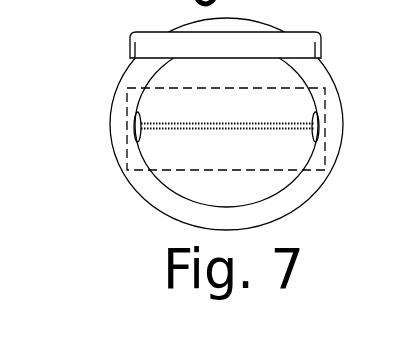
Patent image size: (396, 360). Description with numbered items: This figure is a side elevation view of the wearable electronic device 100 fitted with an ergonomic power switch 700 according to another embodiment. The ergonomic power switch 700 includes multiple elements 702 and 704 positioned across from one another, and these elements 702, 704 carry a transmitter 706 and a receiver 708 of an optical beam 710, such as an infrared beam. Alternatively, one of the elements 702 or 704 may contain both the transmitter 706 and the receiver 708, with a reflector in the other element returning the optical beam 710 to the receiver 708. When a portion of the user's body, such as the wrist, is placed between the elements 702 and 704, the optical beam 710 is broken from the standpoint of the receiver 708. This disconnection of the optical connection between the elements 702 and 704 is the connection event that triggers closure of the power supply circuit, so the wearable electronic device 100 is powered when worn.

The wearable electronic device 100 is at (102, 29).
The ergonomic power switch 700 is at (127, 88).
The element 702 is at (142, 138).
The element 704 is at (311, 138).
The transmitter 706 is at (148, 114).
The receiver 708 is at (306, 114).
The optical beam 710 is at (233, 128).